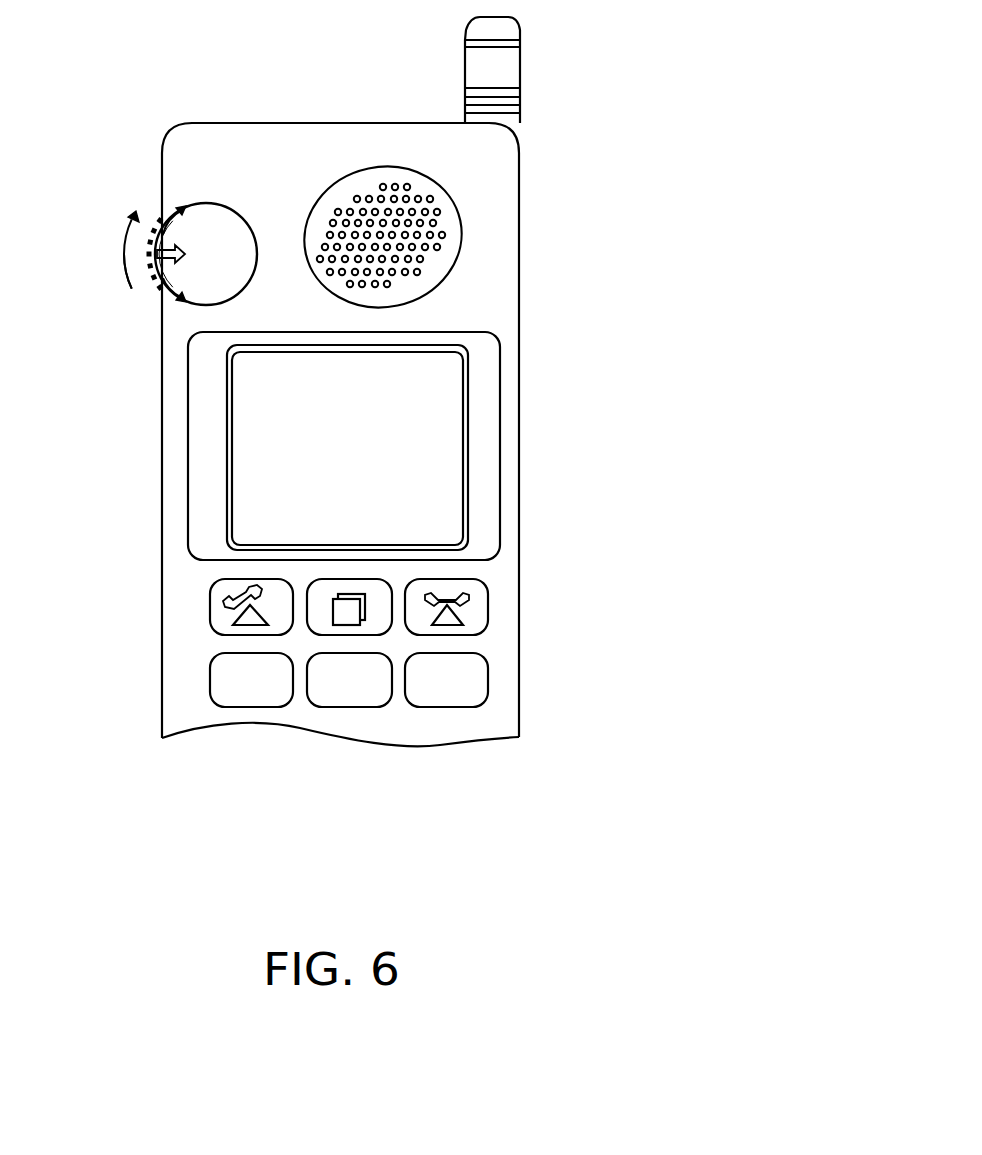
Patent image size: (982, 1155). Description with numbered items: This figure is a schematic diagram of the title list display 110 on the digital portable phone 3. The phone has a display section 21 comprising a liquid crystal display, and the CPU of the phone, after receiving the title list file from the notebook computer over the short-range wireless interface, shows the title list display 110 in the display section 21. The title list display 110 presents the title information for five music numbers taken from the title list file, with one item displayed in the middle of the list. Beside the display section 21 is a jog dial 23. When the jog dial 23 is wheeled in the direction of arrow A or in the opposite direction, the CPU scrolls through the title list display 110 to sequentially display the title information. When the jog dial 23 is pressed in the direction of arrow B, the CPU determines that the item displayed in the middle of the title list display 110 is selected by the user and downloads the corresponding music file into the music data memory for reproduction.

The digital portable phone 3 is at (676, 722).
The display section 21 is at (448, 373).
The jog dial 23 is at (157, 214).
The title list display 110 is at (436, 482).
The arrow A is at (127, 274).
The arrow B is at (116, 255).